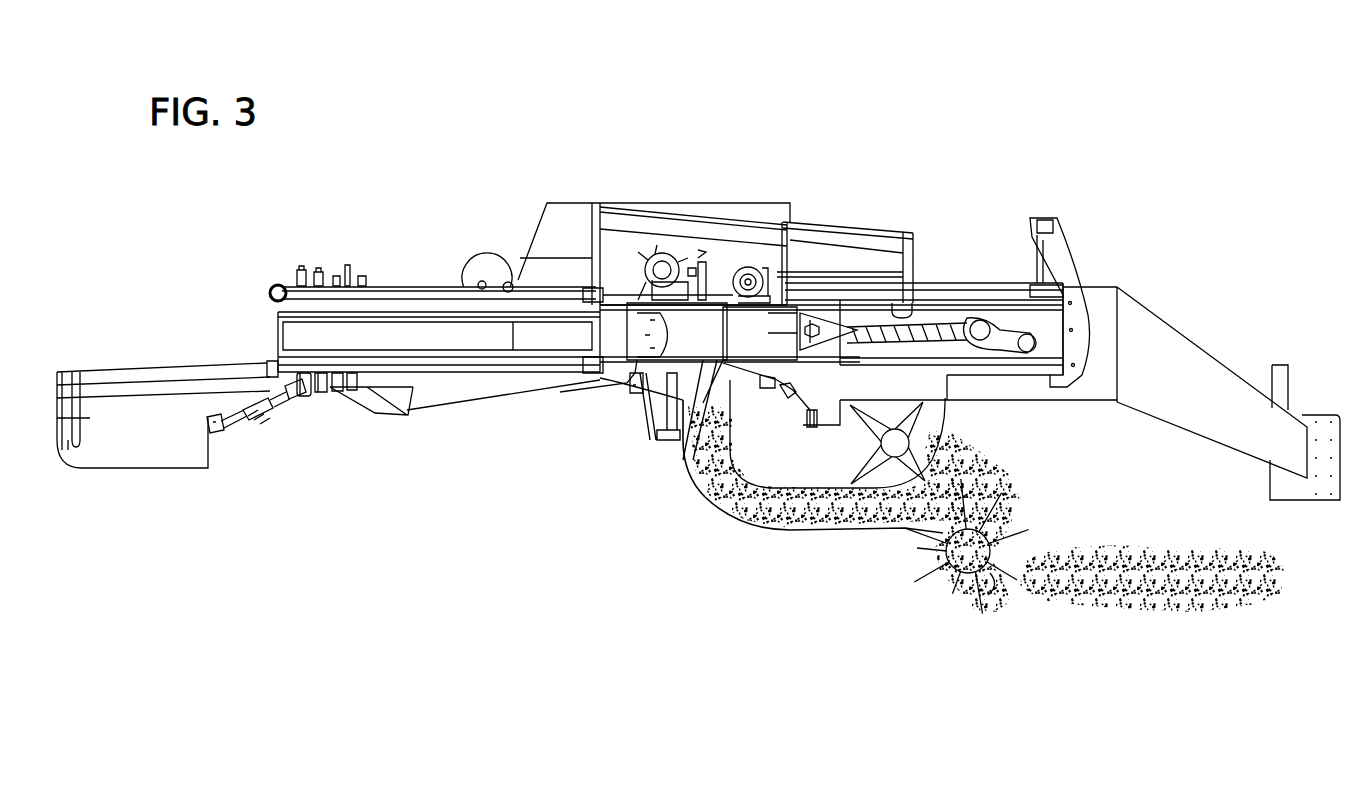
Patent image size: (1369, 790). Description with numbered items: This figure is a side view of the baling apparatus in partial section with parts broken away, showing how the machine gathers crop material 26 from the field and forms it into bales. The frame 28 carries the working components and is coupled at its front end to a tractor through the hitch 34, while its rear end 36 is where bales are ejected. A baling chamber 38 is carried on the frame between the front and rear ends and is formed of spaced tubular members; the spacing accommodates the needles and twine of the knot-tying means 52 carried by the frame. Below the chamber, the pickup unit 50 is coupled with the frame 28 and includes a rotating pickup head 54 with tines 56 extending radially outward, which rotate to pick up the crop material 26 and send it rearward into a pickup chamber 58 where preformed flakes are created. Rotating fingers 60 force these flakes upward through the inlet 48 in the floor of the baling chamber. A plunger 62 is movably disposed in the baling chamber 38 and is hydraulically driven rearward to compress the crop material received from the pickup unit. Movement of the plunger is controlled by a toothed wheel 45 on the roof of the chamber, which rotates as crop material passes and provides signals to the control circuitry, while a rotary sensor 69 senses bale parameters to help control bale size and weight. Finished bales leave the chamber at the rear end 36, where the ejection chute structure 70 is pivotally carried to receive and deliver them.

The crop material 26 is at (1128, 600).
The frame 28 is at (492, 382).
The hitch 34 is at (1318, 412).
The rear end 36 is at (310, 383).
The baling chamber 38 is at (575, 348).
The toothed wheel 45 is at (748, 268).
The inlet 48 is at (722, 392).
The pickup unit 50 is at (905, 567).
The knot-tying means 52 is at (832, 228).
The pickup head 54 is at (960, 585).
The tines 56 is at (992, 578).
The pickup chamber 58 is at (880, 520).
The rotating fingers 60 is at (868, 445).
The plunger 62 is at (762, 349).
The rotary sensor 69 is at (277, 282).
The ejection chute structure 70 is at (185, 352).